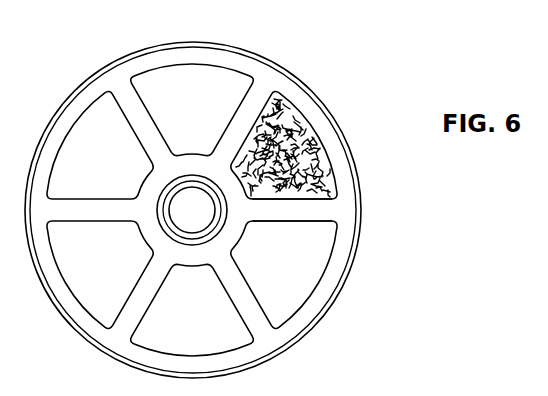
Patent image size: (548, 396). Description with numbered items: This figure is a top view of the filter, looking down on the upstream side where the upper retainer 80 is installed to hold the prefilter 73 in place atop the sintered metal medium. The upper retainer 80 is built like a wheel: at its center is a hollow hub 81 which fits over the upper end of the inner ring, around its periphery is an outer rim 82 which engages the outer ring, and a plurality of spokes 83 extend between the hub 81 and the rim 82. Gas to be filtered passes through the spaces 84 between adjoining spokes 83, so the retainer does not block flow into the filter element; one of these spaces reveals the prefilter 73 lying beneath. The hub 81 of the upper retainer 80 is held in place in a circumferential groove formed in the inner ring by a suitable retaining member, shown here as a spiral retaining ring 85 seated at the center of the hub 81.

The upper retainer 80 is at (230, 83).
The spiral retaining ring 85 is at (186, 175).
The prefilter 73 is at (308, 133).
The outer rim 82 is at (341, 210).
The spokes 83 is at (310, 211).
The spaces 84 is at (296, 291).
The hollow hub 81 is at (227, 235).